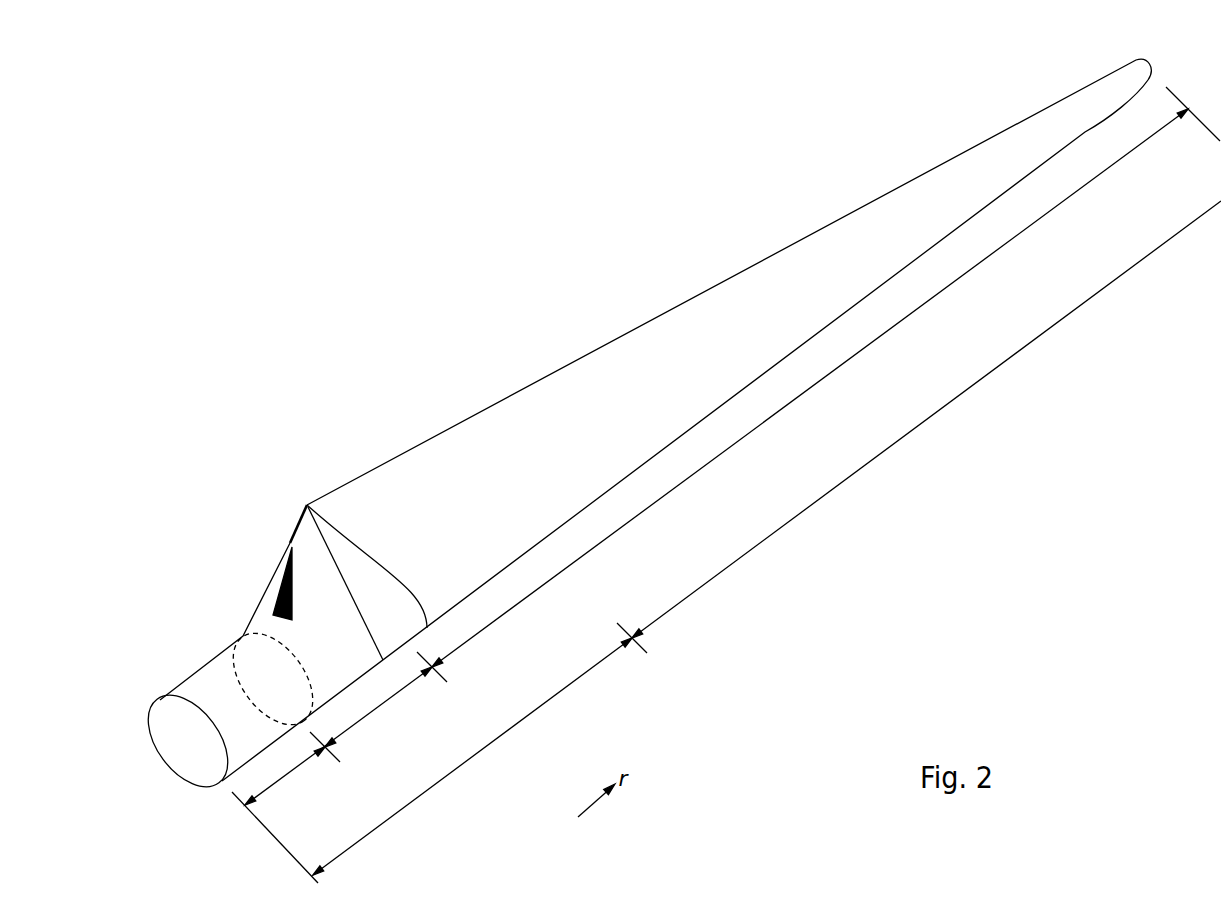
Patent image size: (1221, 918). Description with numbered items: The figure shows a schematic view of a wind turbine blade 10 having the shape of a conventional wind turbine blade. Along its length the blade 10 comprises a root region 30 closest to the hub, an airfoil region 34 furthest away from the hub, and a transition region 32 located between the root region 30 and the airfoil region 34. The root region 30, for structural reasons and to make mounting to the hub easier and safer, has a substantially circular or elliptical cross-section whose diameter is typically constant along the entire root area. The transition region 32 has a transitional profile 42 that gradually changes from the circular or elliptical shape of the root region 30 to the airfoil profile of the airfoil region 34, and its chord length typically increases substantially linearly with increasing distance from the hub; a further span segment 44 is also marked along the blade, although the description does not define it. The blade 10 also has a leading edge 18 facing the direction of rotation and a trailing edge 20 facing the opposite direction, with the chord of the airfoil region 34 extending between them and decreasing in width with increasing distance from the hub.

The wind turbine blade 10 is at (641, 430).
The leading edge 18 is at (847, 315).
The trailing edge 20 is at (852, 205).
The root region 30 is at (285, 775).
The transition region 32 is at (383, 703).
The airfoil region 34 is at (737, 442).
The transitional profile 42 is at (507, 731).
The outboard blade section 44 is at (770, 536).